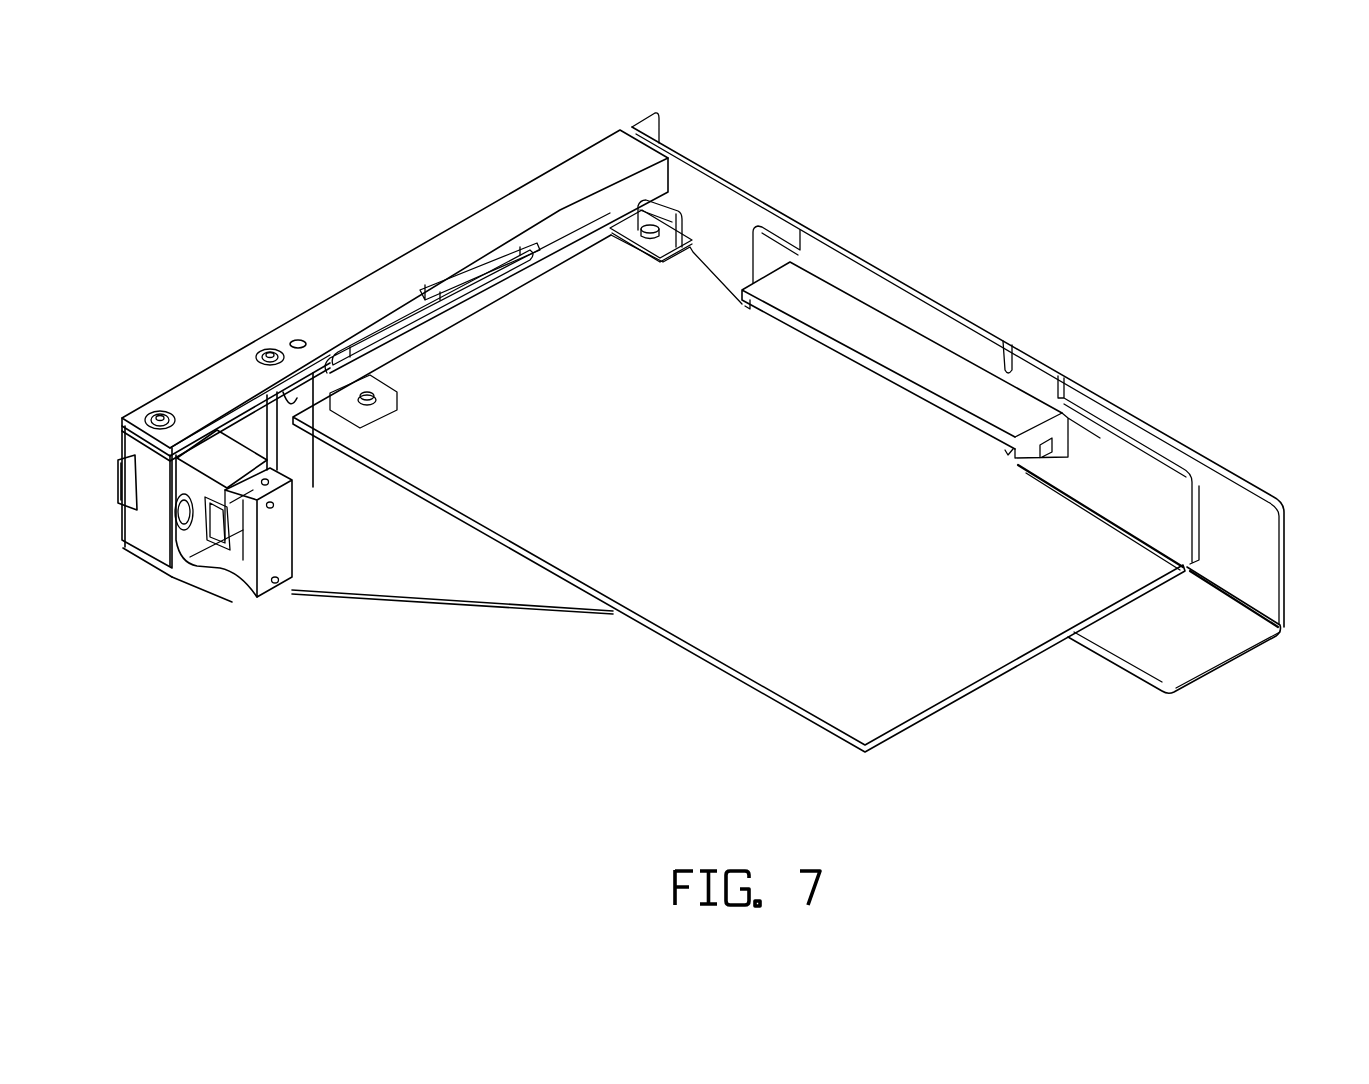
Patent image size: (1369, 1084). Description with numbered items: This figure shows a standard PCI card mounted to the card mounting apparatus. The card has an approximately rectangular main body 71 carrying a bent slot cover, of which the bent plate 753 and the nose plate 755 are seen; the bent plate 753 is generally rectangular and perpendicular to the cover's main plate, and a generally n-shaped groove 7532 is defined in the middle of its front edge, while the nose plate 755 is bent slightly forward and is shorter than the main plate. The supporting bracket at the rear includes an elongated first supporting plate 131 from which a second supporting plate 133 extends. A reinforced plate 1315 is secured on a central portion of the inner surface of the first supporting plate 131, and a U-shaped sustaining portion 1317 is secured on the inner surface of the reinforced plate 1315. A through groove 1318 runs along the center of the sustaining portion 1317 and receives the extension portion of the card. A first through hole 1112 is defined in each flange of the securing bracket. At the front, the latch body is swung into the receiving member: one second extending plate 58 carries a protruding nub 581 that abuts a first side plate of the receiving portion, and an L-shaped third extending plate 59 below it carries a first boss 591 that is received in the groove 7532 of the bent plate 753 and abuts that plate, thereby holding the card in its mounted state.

The main body 71 is at (673, 587).
The first supporting plate 131 is at (1233, 522).
The second supporting plate 133 is at (1199, 634).
The reinforced plate 1315 is at (900, 300).
The sustaining portion 1317 is at (942, 372).
The through groove 1318 is at (1065, 440).
The nose plate 755 is at (668, 208).
The bent plate 753 is at (314, 388).
The n-shaped groove 7532 is at (253, 393).
The first through hole 1112 is at (160, 416).
The second extending plate 58 is at (207, 527).
The protruding nub 581 is at (263, 485).
The third extending plate 59 is at (285, 490).
The first boss 591 is at (272, 509).